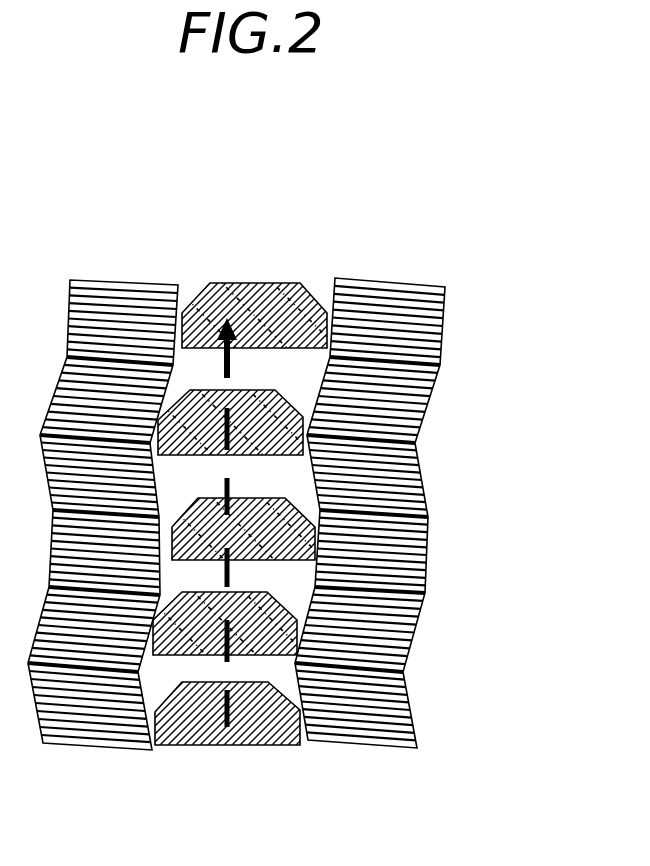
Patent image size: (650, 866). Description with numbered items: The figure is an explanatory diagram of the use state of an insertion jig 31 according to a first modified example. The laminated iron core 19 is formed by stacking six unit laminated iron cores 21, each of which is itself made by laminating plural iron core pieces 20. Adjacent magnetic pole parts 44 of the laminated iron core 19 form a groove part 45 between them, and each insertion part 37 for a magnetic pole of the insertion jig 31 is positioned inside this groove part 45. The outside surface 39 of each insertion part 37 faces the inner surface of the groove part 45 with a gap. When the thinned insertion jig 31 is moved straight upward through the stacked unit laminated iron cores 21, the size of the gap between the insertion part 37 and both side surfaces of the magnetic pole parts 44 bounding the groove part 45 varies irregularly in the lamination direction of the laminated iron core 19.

The laminated iron core 19 is at (417, 473).
The iron core piece 20 is at (442, 330).
The unit laminated iron core 21 is at (459, 296).
The insertion jig 31 is at (240, 490).
The insertion part for magnetic pole 37 is at (272, 292).
The outside surface of insertion part 39 is at (310, 730).
The magnetic pole part 44 is at (96, 763).
The groove part 45 is at (192, 362).